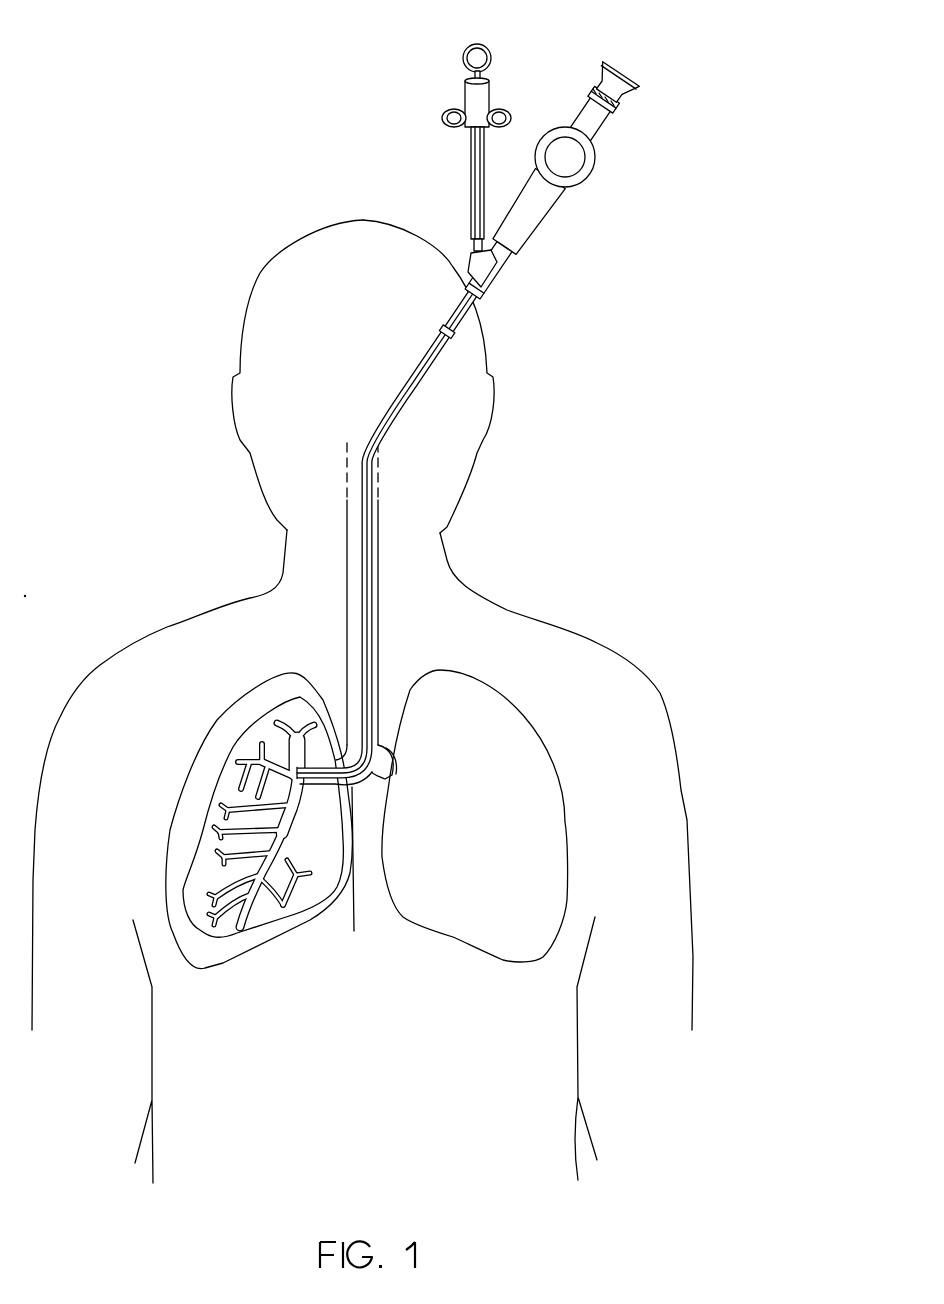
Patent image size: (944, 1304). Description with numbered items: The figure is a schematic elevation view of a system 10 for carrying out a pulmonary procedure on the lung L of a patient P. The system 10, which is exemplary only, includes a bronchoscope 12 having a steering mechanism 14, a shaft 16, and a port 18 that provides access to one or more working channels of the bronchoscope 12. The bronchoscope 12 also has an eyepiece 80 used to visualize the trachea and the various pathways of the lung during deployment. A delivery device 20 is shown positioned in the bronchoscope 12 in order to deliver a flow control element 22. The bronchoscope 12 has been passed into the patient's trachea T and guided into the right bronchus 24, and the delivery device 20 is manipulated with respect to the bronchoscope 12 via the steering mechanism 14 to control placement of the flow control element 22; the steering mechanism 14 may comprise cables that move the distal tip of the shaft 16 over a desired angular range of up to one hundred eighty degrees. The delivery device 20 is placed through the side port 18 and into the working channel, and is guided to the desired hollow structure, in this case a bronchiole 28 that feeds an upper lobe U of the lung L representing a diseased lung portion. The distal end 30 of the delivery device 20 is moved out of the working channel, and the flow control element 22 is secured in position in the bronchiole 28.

The system 10 is at (492, 484).
The bronchoscope 12 is at (557, 207).
The steering mechanism 14 is at (577, 163).
The shaft 16 is at (410, 381).
The port 18 is at (485, 260).
The delivery device 20 is at (405, 118).
The flow control element 22 is at (295, 735).
The right bronchus 24 is at (318, 792).
The bronchiole 28 is at (290, 779).
The distal end 30 is at (354, 873).
The eyepiece 80 is at (627, 108).
The trachea T is at (380, 577).
The patient P is at (618, 668).
The upper lobe U is at (250, 756).
The lung L is at (222, 955).